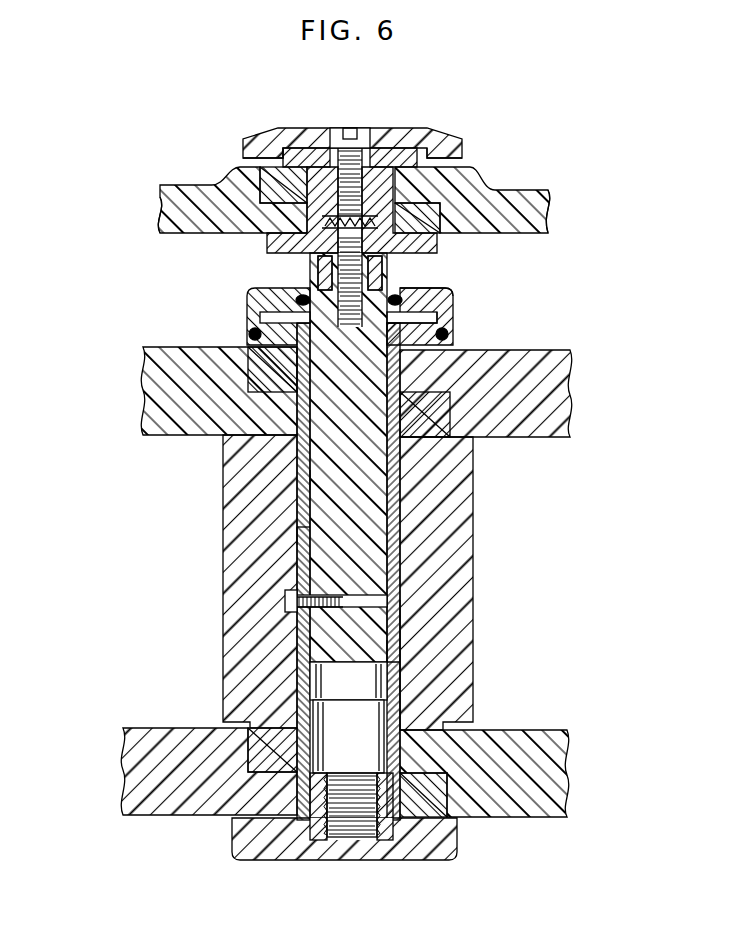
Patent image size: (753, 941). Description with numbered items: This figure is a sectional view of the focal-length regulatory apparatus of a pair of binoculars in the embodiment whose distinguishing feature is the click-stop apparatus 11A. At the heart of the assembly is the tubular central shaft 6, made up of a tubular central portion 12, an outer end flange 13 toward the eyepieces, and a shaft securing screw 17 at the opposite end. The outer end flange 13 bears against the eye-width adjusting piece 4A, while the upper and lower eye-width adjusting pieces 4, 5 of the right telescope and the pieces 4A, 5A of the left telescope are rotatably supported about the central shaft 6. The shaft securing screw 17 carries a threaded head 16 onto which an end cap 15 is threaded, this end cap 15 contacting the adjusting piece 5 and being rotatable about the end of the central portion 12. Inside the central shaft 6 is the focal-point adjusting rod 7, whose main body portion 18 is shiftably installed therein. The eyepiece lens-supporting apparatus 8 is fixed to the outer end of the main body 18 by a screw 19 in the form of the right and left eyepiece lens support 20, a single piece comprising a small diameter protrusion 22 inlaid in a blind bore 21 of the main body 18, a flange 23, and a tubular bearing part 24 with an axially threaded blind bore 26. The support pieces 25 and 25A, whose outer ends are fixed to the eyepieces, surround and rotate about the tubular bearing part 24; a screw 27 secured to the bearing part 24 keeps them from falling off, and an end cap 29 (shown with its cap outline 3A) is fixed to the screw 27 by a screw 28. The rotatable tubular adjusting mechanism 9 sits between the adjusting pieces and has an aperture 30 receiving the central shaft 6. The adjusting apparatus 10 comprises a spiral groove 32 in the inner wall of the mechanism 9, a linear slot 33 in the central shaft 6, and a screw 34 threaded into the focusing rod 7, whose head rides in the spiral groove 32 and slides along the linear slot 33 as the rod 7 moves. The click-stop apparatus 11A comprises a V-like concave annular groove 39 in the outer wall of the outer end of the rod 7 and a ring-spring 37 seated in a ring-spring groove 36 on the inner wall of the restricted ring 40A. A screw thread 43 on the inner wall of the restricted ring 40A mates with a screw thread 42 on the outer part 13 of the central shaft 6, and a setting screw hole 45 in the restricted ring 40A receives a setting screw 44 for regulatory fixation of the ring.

The cap nut 3A is at (396, 118).
The end cap 29 is at (263, 140).
The screw 27 is at (304, 158).
The screw 28 is at (341, 135).
The axially threaded blind bore 26 is at (367, 145).
The screw 19 is at (408, 170).
The eyepiece lens-supporting apparatus 8 is at (500, 187).
The right and left eyepiece lens support 20 is at (252, 210).
The tubular bearing part 24 is at (275, 193).
The support piece 25 is at (177, 204).
The support piece 25A is at (553, 219).
The flange 23 is at (280, 246).
The small diameter protrusion 22 is at (325, 270).
The blind bore 21 is at (380, 268).
The V-like concave annular groove 39 is at (420, 290).
The click-stop apparatus 11A is at (458, 289).
The restricted ring 40A is at (252, 300).
The ring-spring groove 36 is at (405, 299).
The ring-spring 37 is at (447, 314).
The screw thread 43 is at (453, 337).
The screw thread 42 is at (450, 340).
The setting screw hole 45 is at (250, 330).
The setting screw 44 is at (250, 336).
The eye-width adjusting piece 4 is at (155, 388).
The eye-width adjusting piece 4A is at (557, 392).
The outer end flange 13 is at (445, 416).
The main body portion 18 is at (318, 481).
The focal-point adjusting rod 7 is at (385, 502).
The tubular central shaft 6 is at (403, 531).
The rotatable tubular adjusting mechanism 9 is at (476, 566).
The linear slot 33 is at (295, 535).
The spiral groove 32 is at (285, 594).
The adjusting apparatus 10 is at (283, 594).
The screw 34 is at (285, 608).
The tubular central portion 12 is at (400, 630).
The aperture 30 is at (394, 655).
The eye-width adjusting piece 5 is at (128, 771).
The eye-width adjusting piece 5A is at (548, 781).
The threaded head 16 is at (296, 828).
The end cap 15 is at (333, 860).
The shaft securing screw 17 is at (386, 820).